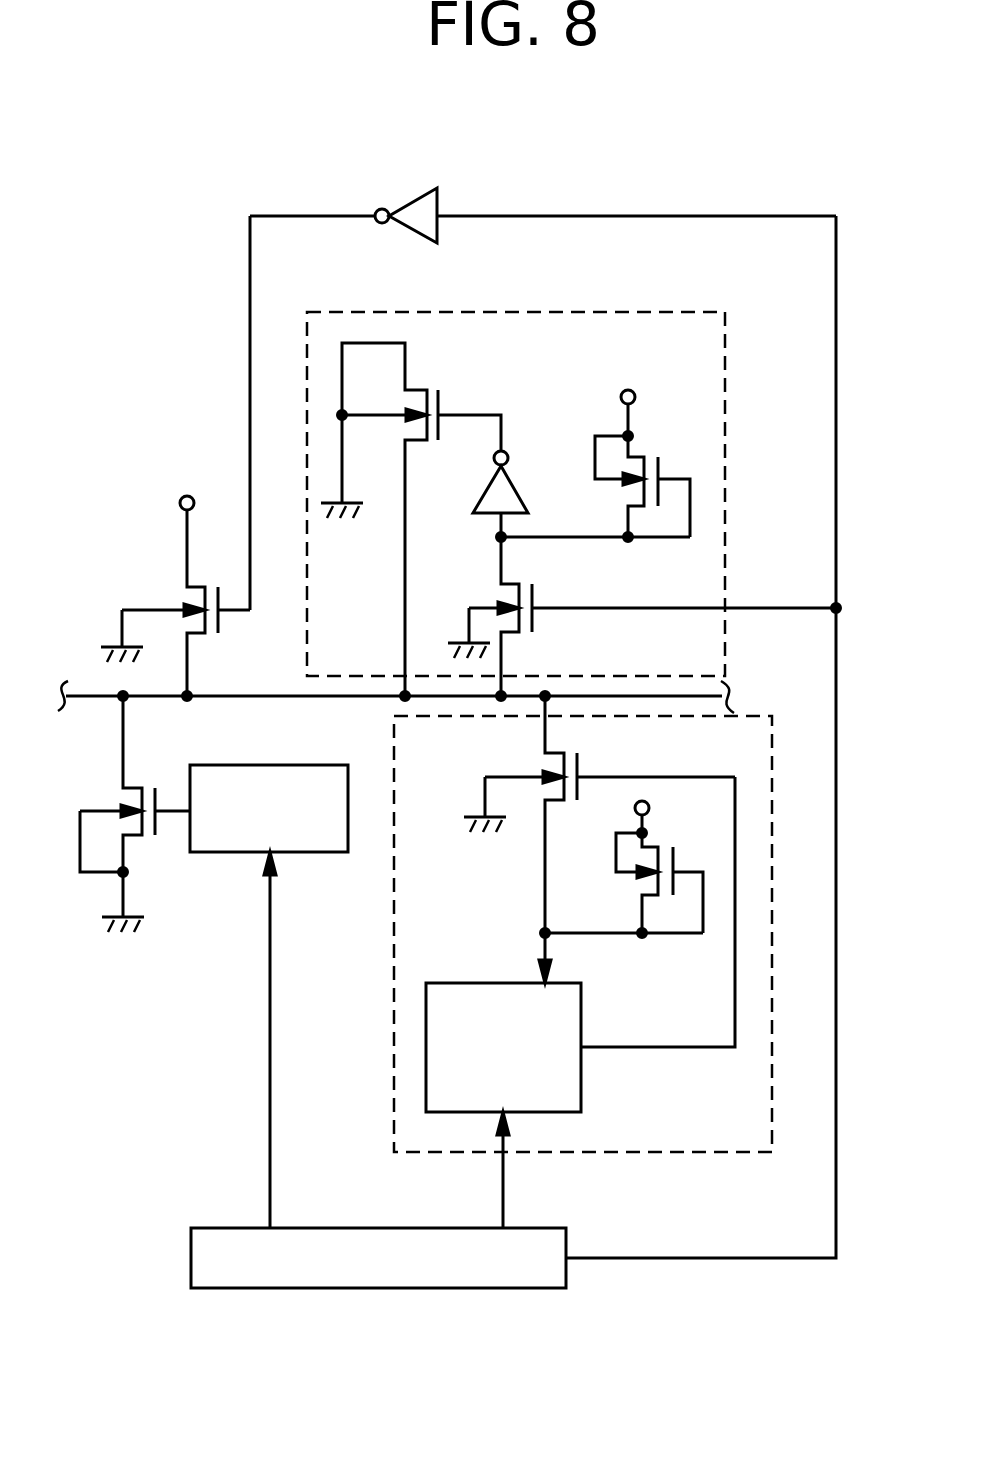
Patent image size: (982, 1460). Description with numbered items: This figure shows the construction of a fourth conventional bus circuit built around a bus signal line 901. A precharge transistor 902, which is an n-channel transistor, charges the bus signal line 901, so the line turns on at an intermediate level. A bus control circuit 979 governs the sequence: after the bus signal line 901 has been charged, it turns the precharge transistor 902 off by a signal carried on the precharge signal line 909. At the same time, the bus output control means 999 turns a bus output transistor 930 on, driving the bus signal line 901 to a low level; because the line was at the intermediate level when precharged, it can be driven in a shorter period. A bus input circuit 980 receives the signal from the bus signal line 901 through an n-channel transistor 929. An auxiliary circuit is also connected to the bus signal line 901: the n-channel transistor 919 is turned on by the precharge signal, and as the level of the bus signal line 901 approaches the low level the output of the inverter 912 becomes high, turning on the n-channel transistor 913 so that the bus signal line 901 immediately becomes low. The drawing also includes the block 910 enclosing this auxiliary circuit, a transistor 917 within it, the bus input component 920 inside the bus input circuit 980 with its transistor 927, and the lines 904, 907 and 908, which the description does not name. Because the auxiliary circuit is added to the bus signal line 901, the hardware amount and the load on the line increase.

The bus signal line 901 is at (90, 694).
The precharge transistor 902 is at (185, 597).
The control signal line to bus output controller 904 is at (270, 1055).
The control signal line to bus input component 907 is at (503, 1186).
The connection line from bus input component to transistor gate 908 is at (681, 1048).
The precharge signal line 909 is at (650, 1258).
The bus holding circuit 910 is at (530, 309).
The inverter 912 is at (517, 485).
The n-channel transistor 913 is at (431, 392).
The transistor 917 is at (650, 460).
The n-channel transistor 919 is at (527, 585).
The bus input component/circuit 920 is at (582, 993).
The transistor 927 is at (666, 848).
The n-channel transistor 929 is at (571, 747).
The bus output transistor 930 is at (130, 800).
The bus control circuit 979 is at (236, 1226).
The bus input circuit 980 is at (395, 1010).
The bus output control means 999 is at (315, 854).